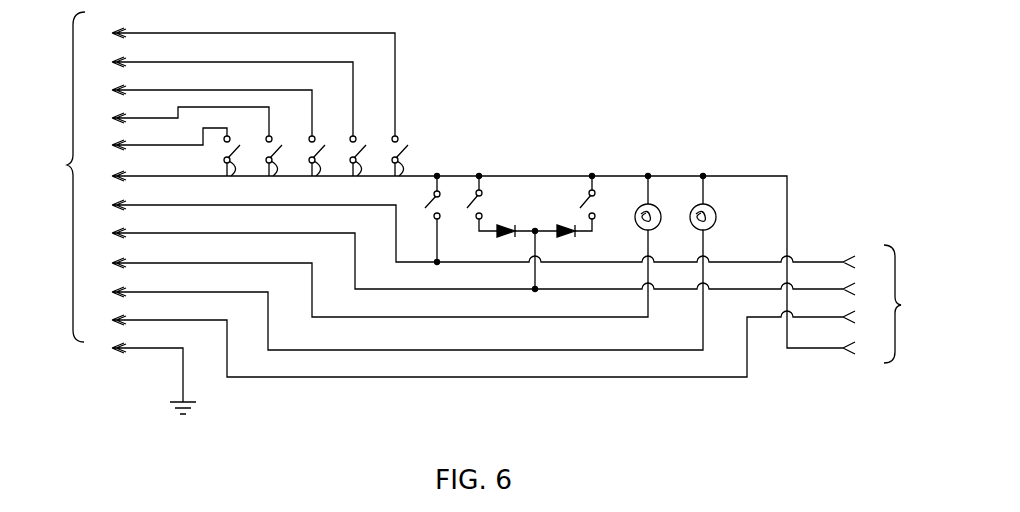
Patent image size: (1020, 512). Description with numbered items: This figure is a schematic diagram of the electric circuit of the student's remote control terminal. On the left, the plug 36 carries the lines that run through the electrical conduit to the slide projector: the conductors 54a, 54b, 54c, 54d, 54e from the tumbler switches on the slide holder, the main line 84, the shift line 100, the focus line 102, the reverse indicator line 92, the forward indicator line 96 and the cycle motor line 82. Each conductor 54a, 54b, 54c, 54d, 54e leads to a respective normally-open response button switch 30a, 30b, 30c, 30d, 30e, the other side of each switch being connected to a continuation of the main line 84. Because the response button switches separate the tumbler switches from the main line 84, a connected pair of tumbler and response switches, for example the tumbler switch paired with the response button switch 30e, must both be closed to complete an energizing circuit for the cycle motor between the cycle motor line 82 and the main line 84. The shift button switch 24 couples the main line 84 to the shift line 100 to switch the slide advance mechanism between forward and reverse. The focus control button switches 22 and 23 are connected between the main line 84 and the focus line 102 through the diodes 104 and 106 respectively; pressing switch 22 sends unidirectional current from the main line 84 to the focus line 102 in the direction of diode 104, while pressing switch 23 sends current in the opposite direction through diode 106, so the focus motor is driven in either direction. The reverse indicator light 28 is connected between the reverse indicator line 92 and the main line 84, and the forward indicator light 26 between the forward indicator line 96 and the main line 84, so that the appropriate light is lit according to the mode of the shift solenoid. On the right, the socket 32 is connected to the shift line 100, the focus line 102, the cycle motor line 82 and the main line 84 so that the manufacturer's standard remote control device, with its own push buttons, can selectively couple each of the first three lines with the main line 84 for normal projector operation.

The plug 36 is at (68, 177).
The conductor 54a is at (237, 80).
The conductor 54b is at (216, 95).
The conductor 54c is at (196, 109).
The conductor 54d is at (174, 121).
The conductor 54e is at (153, 140).
The response button switch 30a is at (395, 176).
The response button switch 30b is at (353, 176).
The response button switch 30c is at (312, 176).
The response button switch 30d is at (269, 176).
The response button switch 30e is at (227, 176).
The main line 84 is at (809, 198).
The shift line 100 is at (479, 233).
The focus line 102 is at (479, 261).
The reverse indicator line 92 is at (368, 273).
The forward indicator line 96 is at (395, 290).
The cycle motor line 82 is at (603, 402).
The shift button switch 24 is at (434, 217).
The focus control button switch 22 is at (482, 203).
The focus control button switch 23 is at (585, 204).
The diode 104 is at (501, 239).
The diode 106 is at (543, 231).
The indicator light 28 is at (642, 205).
The indicator light 26 is at (712, 206).
The socket 32 is at (903, 304).